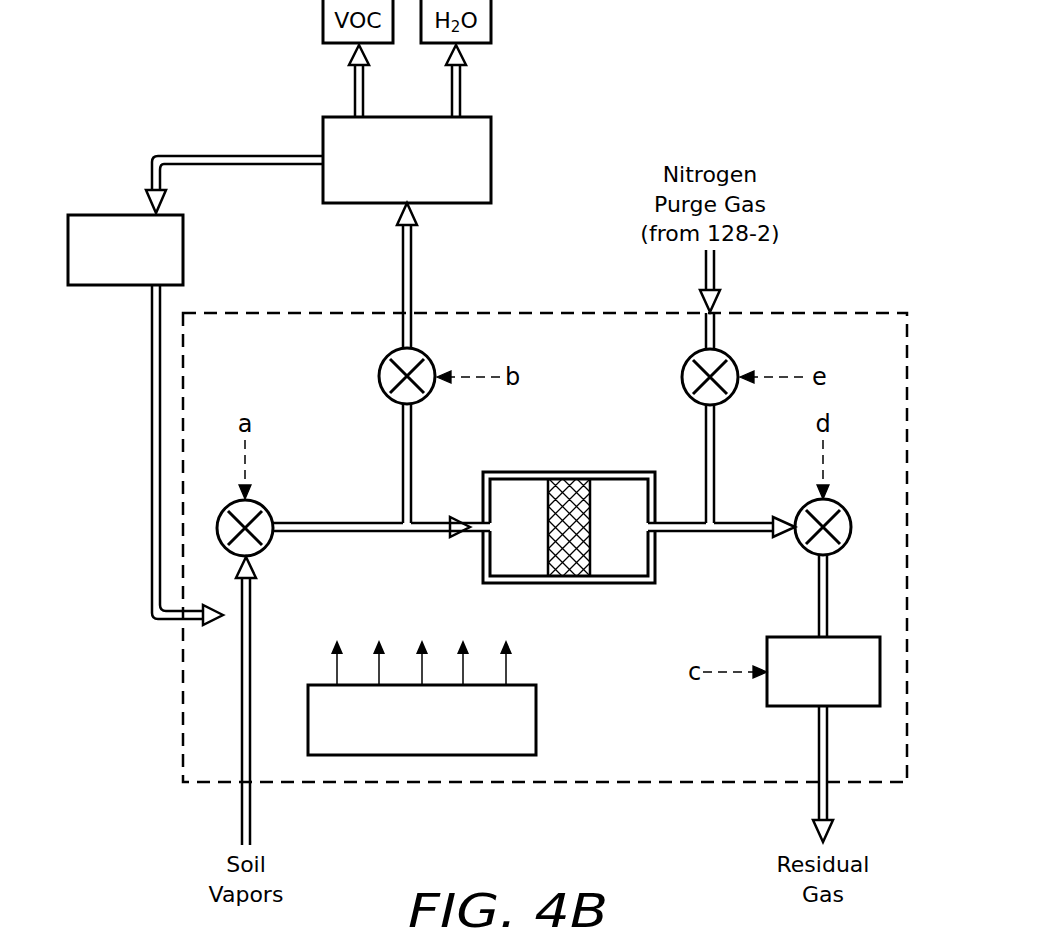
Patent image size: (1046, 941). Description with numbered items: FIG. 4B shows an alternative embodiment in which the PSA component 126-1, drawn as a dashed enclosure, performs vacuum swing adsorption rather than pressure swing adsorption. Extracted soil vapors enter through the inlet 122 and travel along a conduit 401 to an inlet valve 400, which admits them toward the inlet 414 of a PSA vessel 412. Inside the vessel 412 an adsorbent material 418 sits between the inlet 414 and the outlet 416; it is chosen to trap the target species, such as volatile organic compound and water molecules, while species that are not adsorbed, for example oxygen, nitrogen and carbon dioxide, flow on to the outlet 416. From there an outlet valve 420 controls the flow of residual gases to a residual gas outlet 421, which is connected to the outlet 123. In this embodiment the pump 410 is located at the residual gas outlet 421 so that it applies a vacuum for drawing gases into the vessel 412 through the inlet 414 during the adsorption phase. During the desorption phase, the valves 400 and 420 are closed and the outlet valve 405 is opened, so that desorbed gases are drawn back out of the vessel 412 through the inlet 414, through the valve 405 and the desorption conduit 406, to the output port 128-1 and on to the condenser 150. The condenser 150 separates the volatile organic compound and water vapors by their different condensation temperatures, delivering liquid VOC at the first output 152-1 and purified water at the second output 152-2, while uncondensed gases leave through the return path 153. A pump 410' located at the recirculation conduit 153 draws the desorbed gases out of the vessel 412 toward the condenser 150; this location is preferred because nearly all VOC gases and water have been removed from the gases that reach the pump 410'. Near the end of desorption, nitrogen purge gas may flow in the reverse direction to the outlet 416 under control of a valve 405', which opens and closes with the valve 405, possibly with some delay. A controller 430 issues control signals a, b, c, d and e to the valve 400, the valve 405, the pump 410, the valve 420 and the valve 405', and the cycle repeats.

The first output 152-1 is at (355, 97).
The second output 152-2 is at (460, 97).
The condenser 150 is at (490, 147).
The pump 410' is at (125, 214).
The return path 153 is at (152, 365).
The PSA component 126-1 is at (850, 313).
The output port 128-1 is at (405, 265).
The desorption conduit 406 is at (413, 312).
The outlet valve 405 is at (368, 366).
The valve 405' is at (668, 367).
The inlet valve 400 is at (267, 512).
The inlet 414 is at (472, 522).
The PSA vessel 412 is at (613, 472).
The adsorbent material 418 is at (550, 505).
The outlet 416 is at (672, 522).
The outlet valve 420 is at (804, 546).
The pump 410 is at (770, 666).
The residual gas outlet 421 is at (819, 755).
The outlet 123 is at (827, 815).
The conduit 401 is at (242, 700).
The inlet 122 is at (242, 825).
The controller 430 is at (532, 710).